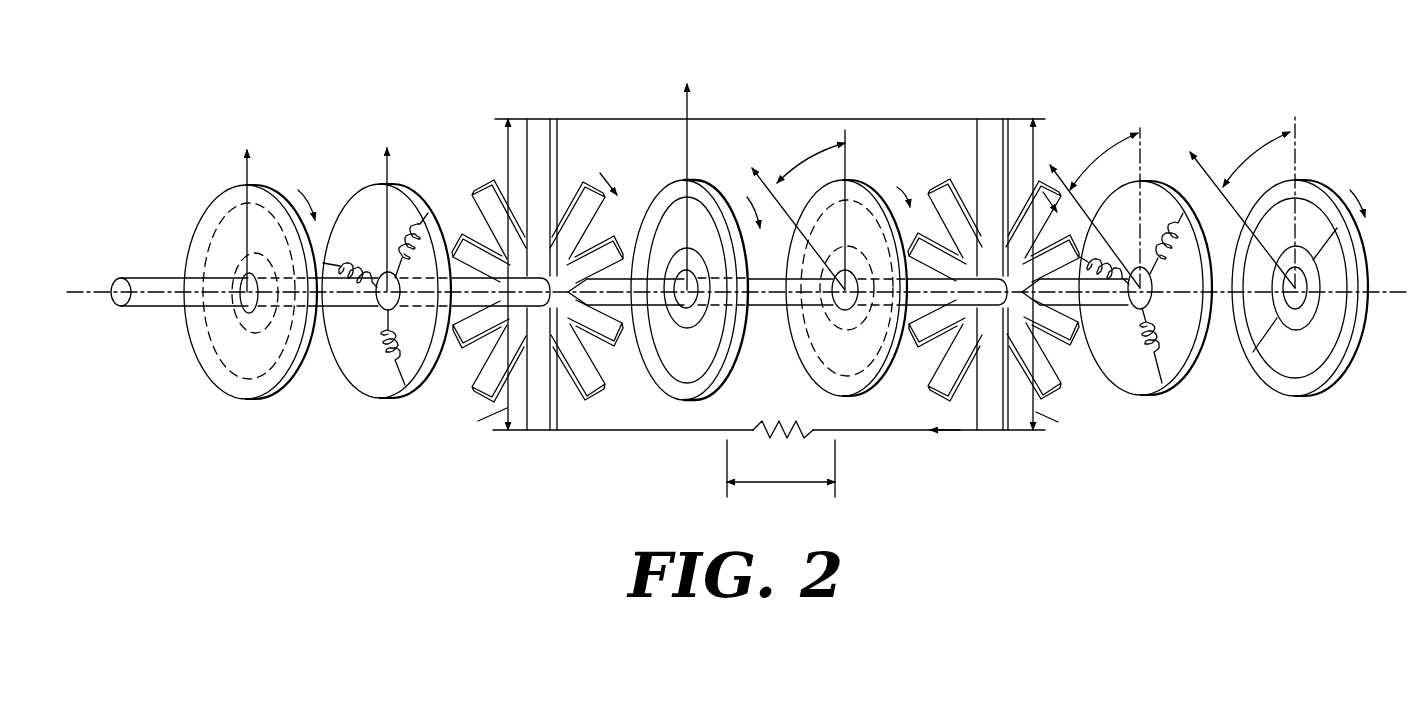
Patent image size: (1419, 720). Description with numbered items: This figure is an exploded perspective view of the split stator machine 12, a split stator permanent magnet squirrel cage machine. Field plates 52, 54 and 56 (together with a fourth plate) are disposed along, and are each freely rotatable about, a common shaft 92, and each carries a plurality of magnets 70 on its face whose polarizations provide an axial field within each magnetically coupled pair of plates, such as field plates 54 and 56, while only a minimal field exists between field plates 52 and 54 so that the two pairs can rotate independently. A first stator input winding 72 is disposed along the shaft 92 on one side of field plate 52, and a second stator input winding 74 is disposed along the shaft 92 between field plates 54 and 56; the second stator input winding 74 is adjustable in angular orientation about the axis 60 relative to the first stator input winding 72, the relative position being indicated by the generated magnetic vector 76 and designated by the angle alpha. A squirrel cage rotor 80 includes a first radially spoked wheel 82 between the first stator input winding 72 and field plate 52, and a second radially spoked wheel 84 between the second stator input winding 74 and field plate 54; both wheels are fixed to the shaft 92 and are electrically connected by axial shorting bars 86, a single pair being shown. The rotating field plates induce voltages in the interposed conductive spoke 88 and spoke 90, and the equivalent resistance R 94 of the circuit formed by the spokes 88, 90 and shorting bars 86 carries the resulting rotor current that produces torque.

The split stator machine 12 is at (738, 269).
The field plate 52 is at (680, 397).
The field plate 54 is at (814, 244).
The field plate 56 is at (1340, 372).
The axis 60 is at (83, 294).
The magnets 70 is at (292, 207).
The first stator input winding 72 is at (368, 378).
The second stator input winding 74 is at (1143, 384).
The generated magnetic vector 76 is at (388, 180).
The squirrel cage rotor 80 is at (760, 112).
The first radially spoked wheel 82 is at (478, 370).
The second radially spoked wheel 84 is at (1060, 386).
The axial shorting bars 86 is at (582, 118).
The spoke 88 is at (531, 430).
The spoke 90 is at (1012, 432).
The shaft 92 is at (138, 280).
The equivalent resistance R 94 is at (772, 440).